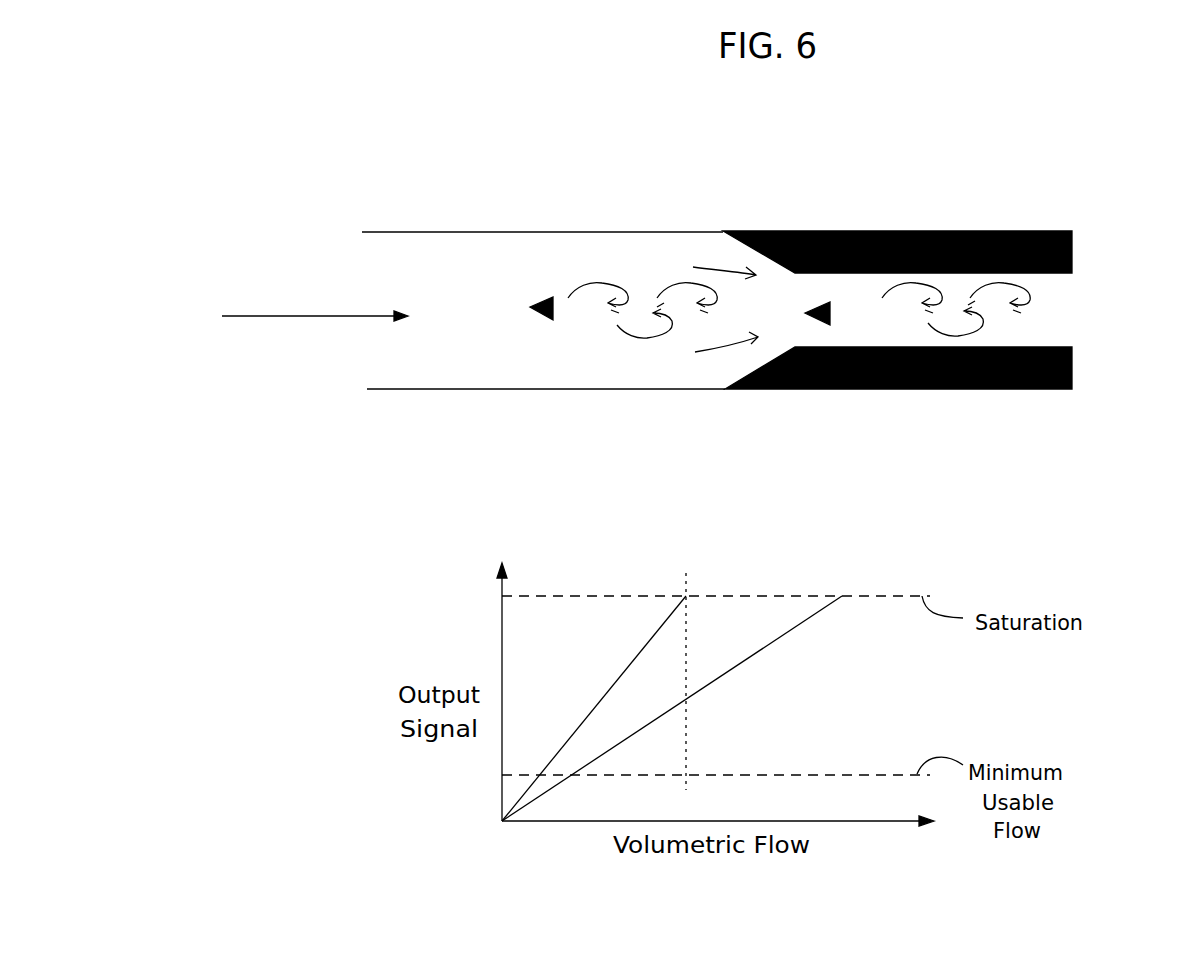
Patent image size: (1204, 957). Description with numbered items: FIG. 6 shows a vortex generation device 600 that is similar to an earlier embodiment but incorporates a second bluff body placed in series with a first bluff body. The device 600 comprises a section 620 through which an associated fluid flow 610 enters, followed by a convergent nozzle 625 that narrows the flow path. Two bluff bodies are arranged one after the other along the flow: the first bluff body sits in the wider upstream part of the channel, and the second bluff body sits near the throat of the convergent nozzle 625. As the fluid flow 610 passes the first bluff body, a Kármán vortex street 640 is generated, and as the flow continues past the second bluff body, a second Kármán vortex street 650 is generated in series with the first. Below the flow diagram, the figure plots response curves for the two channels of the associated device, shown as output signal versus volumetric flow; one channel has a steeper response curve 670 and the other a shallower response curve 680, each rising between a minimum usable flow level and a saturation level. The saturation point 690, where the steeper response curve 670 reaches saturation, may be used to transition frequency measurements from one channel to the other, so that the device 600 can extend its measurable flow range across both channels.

The device 600 is at (478, 136).
The fluid flow 610 is at (272, 316).
The section 620 is at (413, 234).
The convergent nozzle 625 is at (760, 232).
The Kármán vortex street 640 is at (630, 272).
The Kármán vortex street 650 is at (1055, 302).
The response curve 670 is at (653, 633).
The response curve 680 is at (785, 632).
The saturation point 690 is at (713, 565).